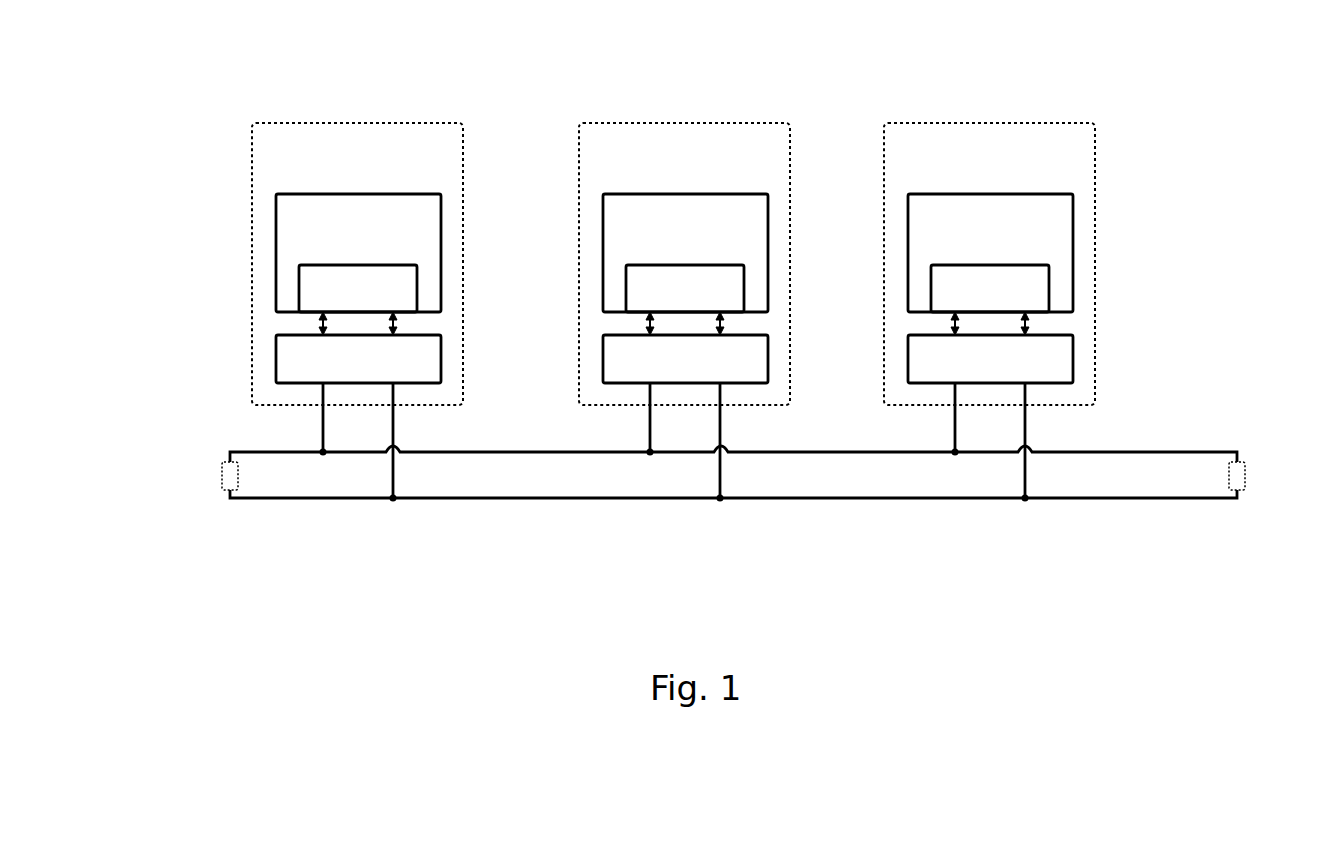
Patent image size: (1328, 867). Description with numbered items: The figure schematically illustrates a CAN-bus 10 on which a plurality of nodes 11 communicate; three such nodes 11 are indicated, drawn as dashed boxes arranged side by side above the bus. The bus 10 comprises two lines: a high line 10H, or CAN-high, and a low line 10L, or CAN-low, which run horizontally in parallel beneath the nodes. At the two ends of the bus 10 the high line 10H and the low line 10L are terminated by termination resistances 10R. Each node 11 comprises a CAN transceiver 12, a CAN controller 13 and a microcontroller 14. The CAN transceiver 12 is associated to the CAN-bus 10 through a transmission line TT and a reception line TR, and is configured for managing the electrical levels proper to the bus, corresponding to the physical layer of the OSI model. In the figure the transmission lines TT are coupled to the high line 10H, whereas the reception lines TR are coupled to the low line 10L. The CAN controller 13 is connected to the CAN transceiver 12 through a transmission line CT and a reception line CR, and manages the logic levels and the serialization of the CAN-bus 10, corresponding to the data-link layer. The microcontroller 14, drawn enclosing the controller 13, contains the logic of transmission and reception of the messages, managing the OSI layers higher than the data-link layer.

The CAN-bus 10 is at (250, 448).
The high line 10H is at (733, 444).
The low line 10L is at (733, 510).
The termination resistance 10R is at (732, 481).
The node 11 is at (944, 106).
The CAN transceiver 12 is at (441, 359).
The CAN controller 13 is at (417, 279).
The microcontroller 14 is at (441, 243).
The transmission line CT is at (305, 325).
The reception line CR is at (413, 325).
The transmission line TT is at (303, 419).
The reception line TR is at (414, 442).